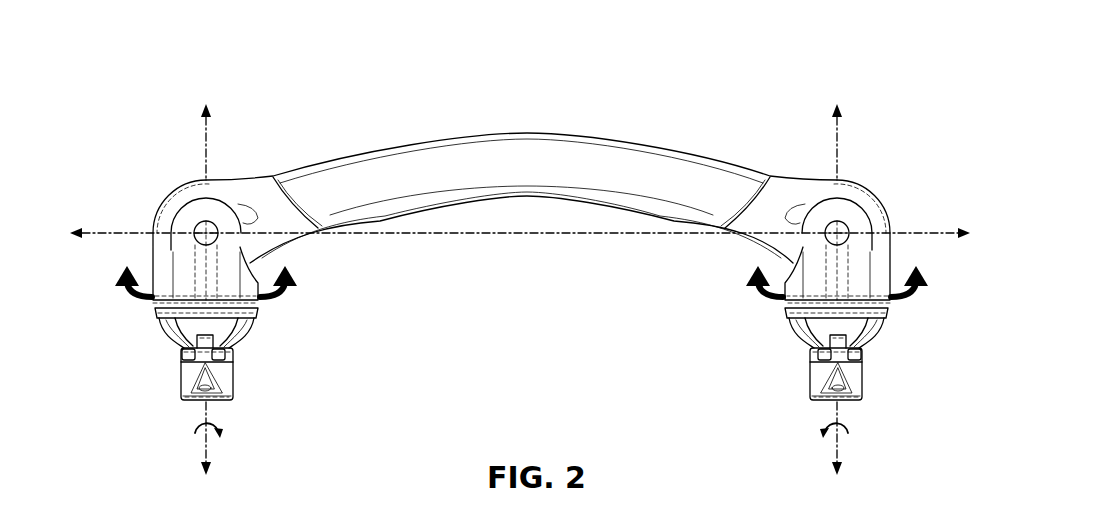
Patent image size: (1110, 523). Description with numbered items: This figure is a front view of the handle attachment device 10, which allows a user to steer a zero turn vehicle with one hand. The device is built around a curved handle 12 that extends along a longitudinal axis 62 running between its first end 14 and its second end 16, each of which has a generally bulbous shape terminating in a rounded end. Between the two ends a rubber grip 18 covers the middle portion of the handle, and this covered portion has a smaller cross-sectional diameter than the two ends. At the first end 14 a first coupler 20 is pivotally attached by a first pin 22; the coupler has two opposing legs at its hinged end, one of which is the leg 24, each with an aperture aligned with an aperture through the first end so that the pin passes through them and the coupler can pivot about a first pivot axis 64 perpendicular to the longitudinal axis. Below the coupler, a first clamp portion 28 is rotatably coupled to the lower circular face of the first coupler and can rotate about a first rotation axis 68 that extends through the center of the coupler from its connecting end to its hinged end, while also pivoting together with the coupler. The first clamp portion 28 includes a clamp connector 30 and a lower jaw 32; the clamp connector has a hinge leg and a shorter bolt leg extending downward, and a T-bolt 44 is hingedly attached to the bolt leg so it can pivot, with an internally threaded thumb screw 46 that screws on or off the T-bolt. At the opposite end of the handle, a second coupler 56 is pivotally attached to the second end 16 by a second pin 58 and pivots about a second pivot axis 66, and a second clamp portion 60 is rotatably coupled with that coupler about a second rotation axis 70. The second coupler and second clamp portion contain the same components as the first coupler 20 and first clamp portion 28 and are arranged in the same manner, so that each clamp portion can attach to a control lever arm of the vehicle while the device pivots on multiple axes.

The handle attachment device 10 is at (272, 30).
The handle 12 is at (297, 142).
The first end 14 is at (177, 200).
The second end 16 is at (861, 200).
The grip 18 is at (558, 155).
The first coupler 20 is at (117, 306).
The first pin 22 is at (221, 238).
The leg 24 is at (200, 219).
The first clamp portion 28 is at (265, 363).
The clamp connector 30 is at (203, 320).
The lower jaw 32 is at (229, 382).
The T-bolt 44 is at (206, 351).
The thumb screw 46 is at (205, 376).
The second coupler 56 is at (750, 310).
The second pin 58 is at (845, 225).
The second clamp portion 60 is at (883, 373).
The longitudinal axis 62 is at (547, 236).
The first pivot axis 64 is at (205, 236).
The second pivot axis 66 is at (839, 237).
The first rotation axis 68 is at (206, 147).
The second rotation axis 70 is at (837, 143).